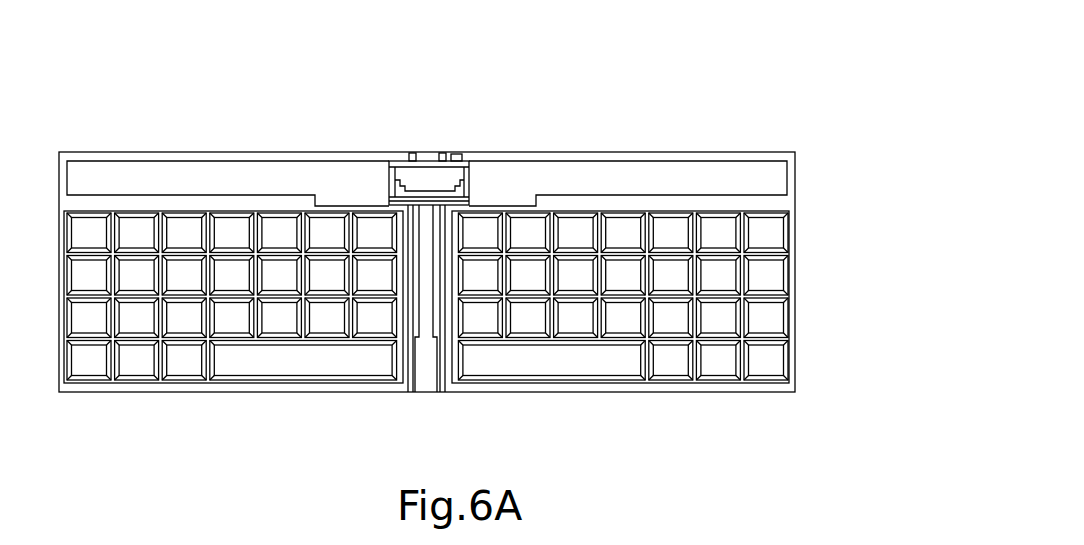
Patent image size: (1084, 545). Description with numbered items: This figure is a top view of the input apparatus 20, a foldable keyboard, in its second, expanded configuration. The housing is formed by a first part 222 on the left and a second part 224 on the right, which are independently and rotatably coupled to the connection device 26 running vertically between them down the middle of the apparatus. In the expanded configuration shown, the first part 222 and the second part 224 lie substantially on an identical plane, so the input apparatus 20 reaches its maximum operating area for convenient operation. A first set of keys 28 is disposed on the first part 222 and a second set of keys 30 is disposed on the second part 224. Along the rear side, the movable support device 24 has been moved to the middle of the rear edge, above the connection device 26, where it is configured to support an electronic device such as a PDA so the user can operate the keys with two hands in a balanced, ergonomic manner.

The input apparatus 20 is at (800, 75).
The first part 222 is at (258, 182).
The second part 224 is at (659, 176).
The support device 24 is at (427, 186).
The connection device 26 is at (430, 372).
The first set of keys 28 is at (139, 357).
The second set of keys 30 is at (670, 357).